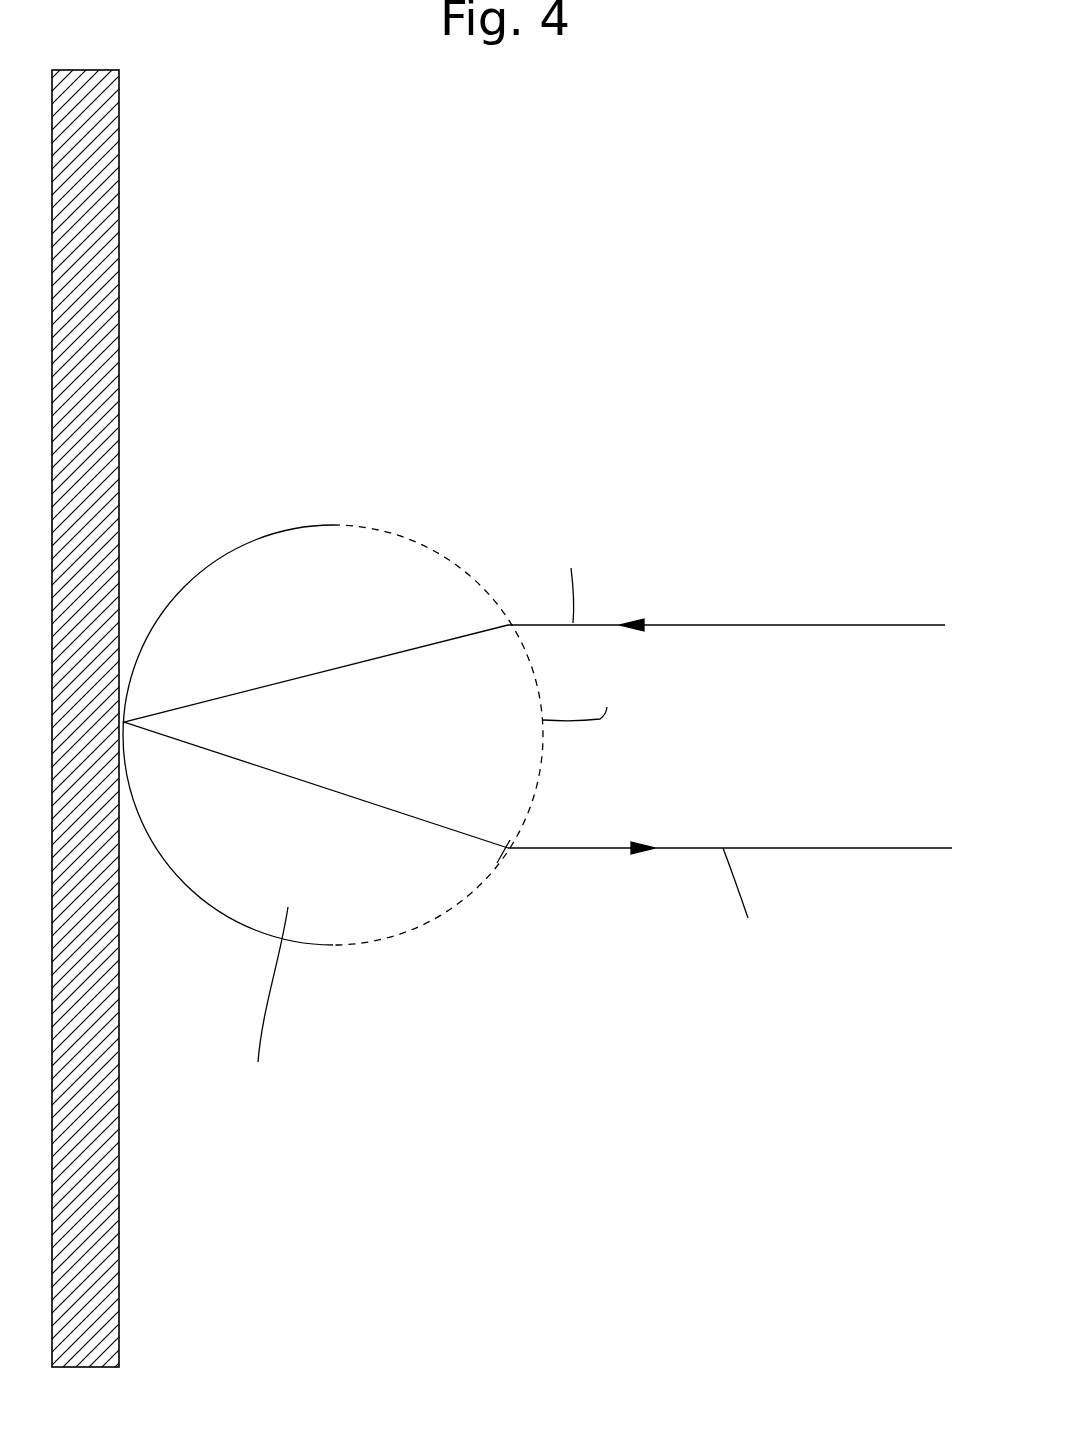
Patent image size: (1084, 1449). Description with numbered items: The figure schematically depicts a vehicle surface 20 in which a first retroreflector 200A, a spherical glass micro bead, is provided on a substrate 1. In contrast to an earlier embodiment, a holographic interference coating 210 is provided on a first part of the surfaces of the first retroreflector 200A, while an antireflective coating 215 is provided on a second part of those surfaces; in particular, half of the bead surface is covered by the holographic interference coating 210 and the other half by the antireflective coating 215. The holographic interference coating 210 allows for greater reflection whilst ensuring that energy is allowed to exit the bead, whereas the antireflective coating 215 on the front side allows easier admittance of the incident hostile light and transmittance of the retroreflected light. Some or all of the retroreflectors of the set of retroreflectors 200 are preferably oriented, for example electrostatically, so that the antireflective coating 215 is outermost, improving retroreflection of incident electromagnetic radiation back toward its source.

The substrate 1 is at (119, 1303).
The vehicle surface 20 is at (537, 892).
The set of retroreflectors 200 is at (453, 818).
The first retroreflector 200A is at (464, 897).
The holographic interference coating 210 is at (183, 885).
The antireflective coating 215 is at (497, 863).